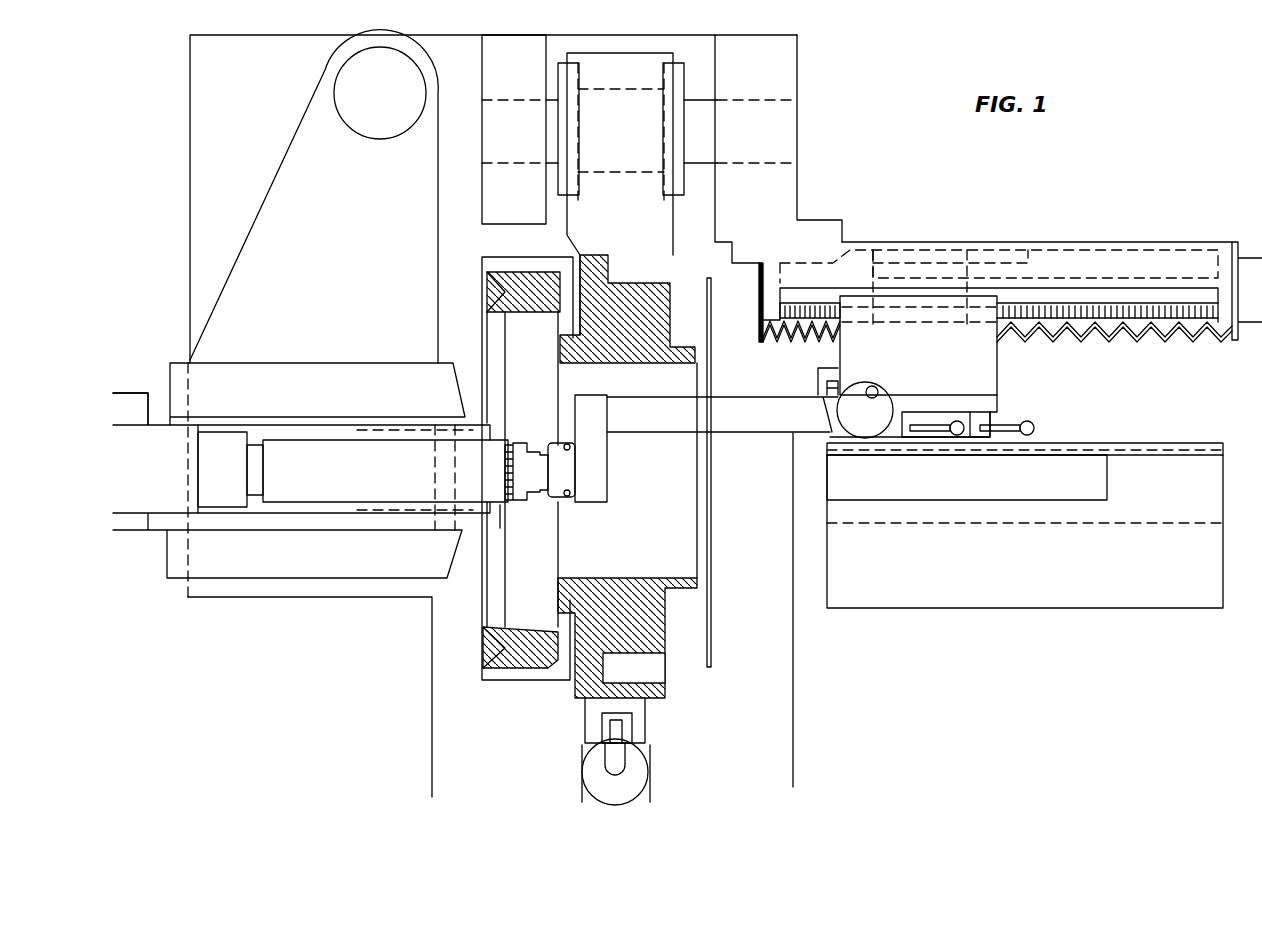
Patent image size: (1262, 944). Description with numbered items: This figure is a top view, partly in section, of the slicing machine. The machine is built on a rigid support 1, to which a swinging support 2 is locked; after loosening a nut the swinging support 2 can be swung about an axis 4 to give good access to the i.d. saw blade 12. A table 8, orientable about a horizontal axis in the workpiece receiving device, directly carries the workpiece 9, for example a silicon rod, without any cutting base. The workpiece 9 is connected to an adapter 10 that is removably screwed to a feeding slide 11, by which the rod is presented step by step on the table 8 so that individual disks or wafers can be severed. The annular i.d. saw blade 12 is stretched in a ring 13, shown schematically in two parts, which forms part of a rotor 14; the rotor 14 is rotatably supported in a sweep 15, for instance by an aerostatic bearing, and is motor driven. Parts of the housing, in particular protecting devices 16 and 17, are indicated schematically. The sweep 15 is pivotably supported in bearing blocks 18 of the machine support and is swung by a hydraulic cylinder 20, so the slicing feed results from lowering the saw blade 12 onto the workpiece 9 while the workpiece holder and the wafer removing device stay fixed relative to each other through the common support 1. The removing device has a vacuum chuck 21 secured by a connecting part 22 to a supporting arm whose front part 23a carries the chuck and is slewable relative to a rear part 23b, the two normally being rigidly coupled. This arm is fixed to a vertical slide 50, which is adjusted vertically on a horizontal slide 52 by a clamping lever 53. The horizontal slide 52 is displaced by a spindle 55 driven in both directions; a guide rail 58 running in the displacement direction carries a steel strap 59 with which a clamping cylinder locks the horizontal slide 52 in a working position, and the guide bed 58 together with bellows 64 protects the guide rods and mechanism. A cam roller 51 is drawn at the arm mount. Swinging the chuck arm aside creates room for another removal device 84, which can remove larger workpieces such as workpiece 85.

The rigid support 1 is at (445, 725).
The swinging support 2 is at (260, 240).
The axis 4 is at (372, 118).
The table 8 is at (305, 430).
The workpiece 9 is at (388, 465).
The adapter 10 is at (255, 452).
The feeding slide 11 is at (132, 440).
The i.d. saw blade 12 is at (505, 578).
The ring 13 is at (493, 668).
The rotor 14 is at (668, 332).
The sweep 15 is at (652, 232).
The protecting device 16 is at (480, 270).
The protecting device 17 is at (712, 316).
The bearing blocks 18 is at (520, 62).
The hydraulic cylinder 20 is at (635, 772).
The vacuum chuck 21 is at (534, 416).
The connecting part 22 is at (565, 470).
The front part of supporting arm 23a is at (595, 430).
The rear part of supporting arm 23b is at (742, 420).
The vertical slide 50 is at (997, 402).
The cam roller 51 is at (860, 425).
The horizontal slide 52 is at (855, 347).
The clamping lever 53 is at (968, 440).
The spindle 55 is at (1105, 320).
The guide rail 58 is at (1117, 268).
The steel strap 59 is at (1025, 262).
The bellows 64 is at (775, 340).
The removal device 84 is at (1060, 598).
The workpiece 85 is at (913, 488).